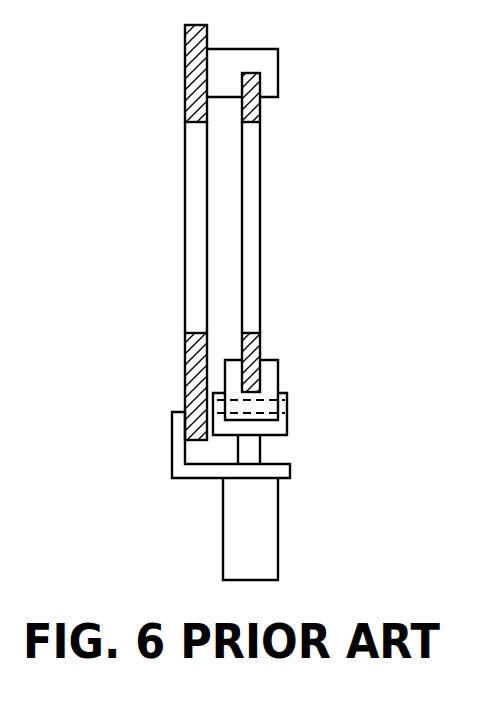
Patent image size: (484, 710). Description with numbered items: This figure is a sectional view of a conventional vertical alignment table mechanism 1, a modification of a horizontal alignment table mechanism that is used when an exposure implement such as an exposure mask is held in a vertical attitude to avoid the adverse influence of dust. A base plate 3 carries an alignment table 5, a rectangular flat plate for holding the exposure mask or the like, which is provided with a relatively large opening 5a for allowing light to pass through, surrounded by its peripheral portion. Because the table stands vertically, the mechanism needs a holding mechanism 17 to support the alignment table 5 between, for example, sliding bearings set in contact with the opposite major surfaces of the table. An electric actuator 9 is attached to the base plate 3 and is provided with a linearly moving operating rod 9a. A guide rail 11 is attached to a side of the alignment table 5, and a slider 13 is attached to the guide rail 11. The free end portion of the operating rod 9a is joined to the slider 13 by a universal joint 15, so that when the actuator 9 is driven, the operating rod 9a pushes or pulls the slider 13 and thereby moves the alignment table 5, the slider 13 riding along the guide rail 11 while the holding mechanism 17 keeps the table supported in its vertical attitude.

The vertical alignment table mechanism 1 is at (168, 350).
The base plate 3 is at (192, 60).
The alignment table 5 is at (245, 73).
The opening 5a is at (250, 123).
The holding mechanism 17 is at (270, 72).
The guide rail 11 is at (272, 372).
The slider 13 is at (277, 427).
The universal joint 15 is at (290, 402).
The actuator 9 is at (260, 538).
The operating rod 9a is at (252, 450).